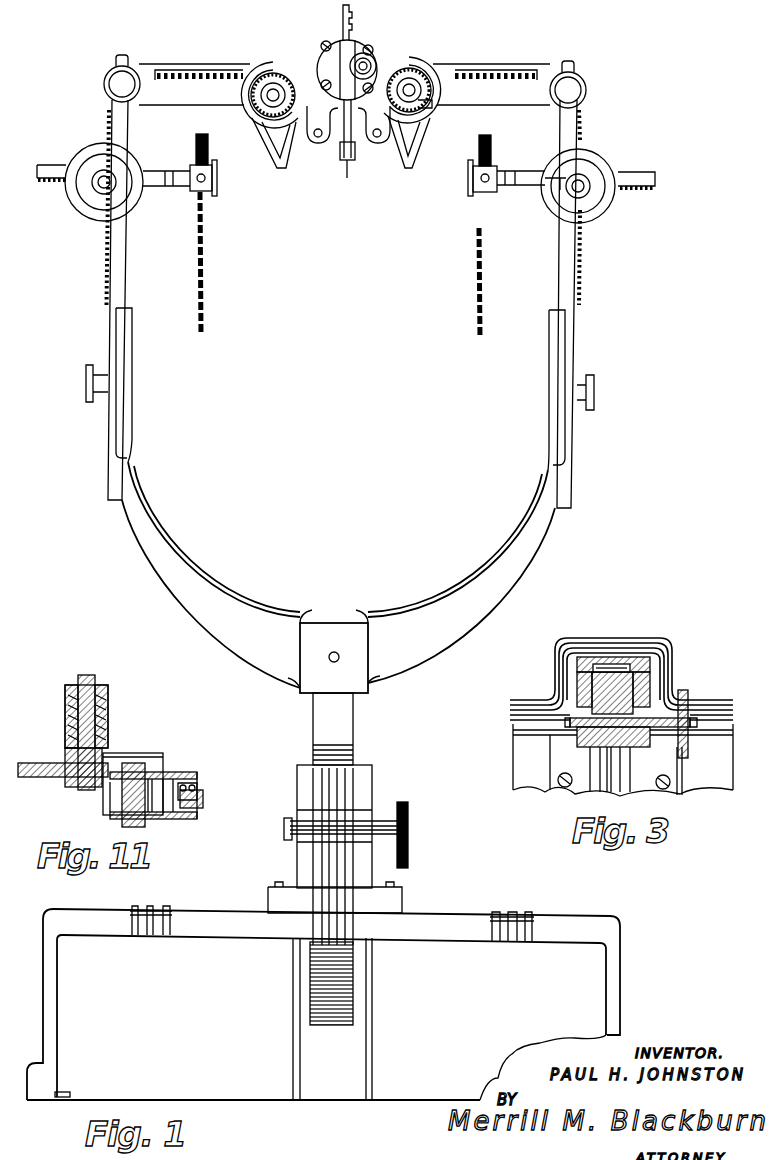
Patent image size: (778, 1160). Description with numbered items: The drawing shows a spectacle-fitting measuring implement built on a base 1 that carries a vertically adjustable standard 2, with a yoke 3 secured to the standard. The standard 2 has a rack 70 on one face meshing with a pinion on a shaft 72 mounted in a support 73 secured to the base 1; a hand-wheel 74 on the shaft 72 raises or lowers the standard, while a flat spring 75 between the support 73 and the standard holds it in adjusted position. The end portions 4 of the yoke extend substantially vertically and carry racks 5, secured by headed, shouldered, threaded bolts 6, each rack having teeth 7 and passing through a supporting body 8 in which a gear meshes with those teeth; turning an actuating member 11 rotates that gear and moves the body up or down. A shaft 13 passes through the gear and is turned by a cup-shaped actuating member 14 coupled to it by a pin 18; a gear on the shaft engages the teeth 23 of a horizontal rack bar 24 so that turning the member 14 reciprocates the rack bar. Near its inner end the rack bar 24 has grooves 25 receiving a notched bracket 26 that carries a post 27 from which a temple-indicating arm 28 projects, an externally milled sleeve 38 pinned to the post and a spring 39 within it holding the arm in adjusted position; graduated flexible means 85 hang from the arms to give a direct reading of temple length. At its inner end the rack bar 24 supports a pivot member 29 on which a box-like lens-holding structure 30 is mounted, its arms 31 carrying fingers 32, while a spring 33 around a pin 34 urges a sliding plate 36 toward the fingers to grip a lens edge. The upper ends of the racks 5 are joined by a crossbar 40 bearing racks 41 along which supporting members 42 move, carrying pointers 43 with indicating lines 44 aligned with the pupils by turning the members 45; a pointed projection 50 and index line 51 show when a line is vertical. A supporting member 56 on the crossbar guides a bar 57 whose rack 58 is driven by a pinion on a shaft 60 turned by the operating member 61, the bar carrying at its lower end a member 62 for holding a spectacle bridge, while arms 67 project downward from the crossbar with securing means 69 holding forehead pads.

In FIG. 1, the base 1 is at (622, 943).
In FIG. 3, the base 1 is at (720, 708).
In FIG. 1, the standard 2 is at (362, 16).
In FIG. 3, the standard 2 is at (662, 682).
In FIG. 1, the yoke 3 is at (524, 580).
In FIG. 1, the end portions 4 is at (132, 346).
In FIG. 1, the racks 5 is at (125, 275).
In FIG. 1, the bolts 6 is at (84, 388).
In FIG. 1, the teeth 7 is at (580, 128).
In FIG. 1, the supporting body 8 is at (130, 162).
In FIG. 1, the actuating member 11 is at (590, 196).
In FIG. 1, the shaft 13 is at (592, 178).
In FIG. 1, the actuating member 14 is at (568, 206).
In FIG. 1, the pin 18 is at (586, 192).
In FIG. 1, the teeth 23 is at (533, 185).
In FIG. 1, the rack bar 24 is at (628, 173).
In FIG. 11, the rack bar 24 is at (122, 795).
In FIG. 1, the grooves 25 is at (512, 183).
In FIG. 1, the bracket 26 is at (500, 172).
In FIG. 11, the bracket 26 is at (165, 770).
In FIG. 1, the post 27 is at (485, 136).
In FIG. 11, the post 27 is at (88, 678).
In FIG. 11, the arm 28 is at (33, 764).
In FIG. 1, the pivot member 29 is at (483, 192).
In FIG. 11, the pivot member 29 is at (132, 763).
In FIG. 11, the lens-holding structure 30 is at (180, 778).
In FIG. 11, the arms 31 is at (158, 817).
In FIG. 1, the fingers 32 is at (473, 170).
In FIG. 11, the spring 33 is at (203, 786).
In FIG. 1, the pin 34 is at (484, 190).
In FIG. 11, the pin 34 is at (205, 799).
In FIG. 1, the plate 36 is at (474, 192).
In FIG. 1, the sleeve 38 is at (198, 140).
In FIG. 11, the sleeve 38 is at (110, 702).
In FIG. 11, the spring 39 is at (110, 718).
In FIG. 1, the crossbar 40 is at (222, 106).
In FIG. 1, the racks 41 is at (168, 76).
In FIG. 1, the supporting members 42 is at (268, 64).
In FIG. 1, the pointers 43 is at (268, 132).
In FIG. 1, the indicating line 44 is at (276, 150).
In FIG. 1, the members 45 is at (274, 80).
In FIG. 1, the pointed projection 50 is at (436, 108).
In FIG. 1, the index line 51 is at (440, 95).
In FIG. 1, the supporting member 56 is at (345, 45).
In FIG. 1, the bar 57 is at (343, 128).
In FIG. 1, the rack 58 is at (354, 26).
In FIG. 1, the shaft 60 is at (372, 62).
In FIG. 1, the operating member 61 is at (364, 80).
In FIG. 1, the member 62 is at (350, 165).
In FIG. 1, the arms 67 is at (318, 118).
In FIG. 1, the securing means 69 is at (313, 138).
In FIG. 1, the rack 70 is at (354, 756).
In FIG. 1, the shaft 72 is at (413, 832).
In FIG. 3, the shaft 72 is at (698, 728).
In FIG. 1, the support 73 is at (222, 805).
In FIG. 3, the support 73 is at (598, 660).
In FIG. 1, the hand-wheel 74 is at (410, 812).
In FIG. 3, the hand-wheel 74 is at (690, 698).
In FIG. 3, the flat spring 75 is at (618, 668).
In FIG. 1, the flexible means 85 is at (203, 270).